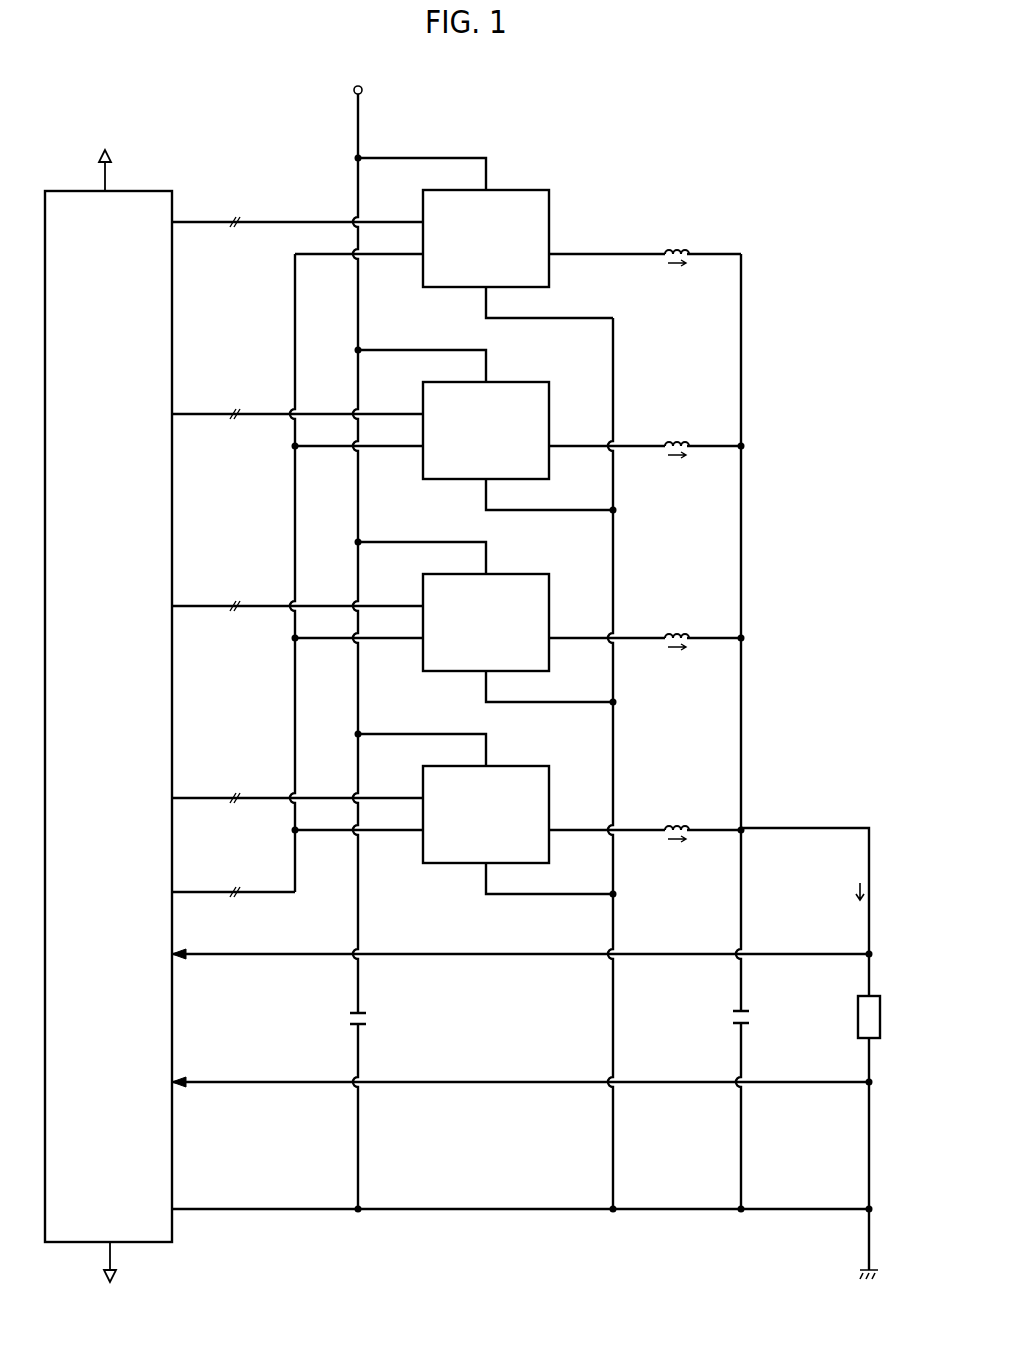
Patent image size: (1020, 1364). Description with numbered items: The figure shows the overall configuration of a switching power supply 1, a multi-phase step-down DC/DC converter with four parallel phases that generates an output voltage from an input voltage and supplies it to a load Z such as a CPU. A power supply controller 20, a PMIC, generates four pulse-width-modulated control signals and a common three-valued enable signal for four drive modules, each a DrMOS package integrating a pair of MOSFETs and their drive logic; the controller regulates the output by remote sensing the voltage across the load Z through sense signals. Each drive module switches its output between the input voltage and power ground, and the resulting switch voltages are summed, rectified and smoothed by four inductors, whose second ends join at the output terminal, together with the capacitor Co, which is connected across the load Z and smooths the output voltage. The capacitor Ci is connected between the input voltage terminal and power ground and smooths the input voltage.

The switching power supply 1 is at (808, 186).
The power supply controller 20 is at (142, 191).
The capacitor Ci is at (369, 1019).
The capacitor Co is at (752, 1018).
The load Z is at (882, 1018).